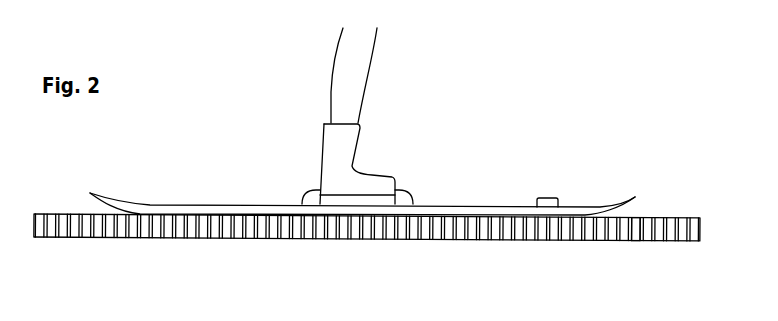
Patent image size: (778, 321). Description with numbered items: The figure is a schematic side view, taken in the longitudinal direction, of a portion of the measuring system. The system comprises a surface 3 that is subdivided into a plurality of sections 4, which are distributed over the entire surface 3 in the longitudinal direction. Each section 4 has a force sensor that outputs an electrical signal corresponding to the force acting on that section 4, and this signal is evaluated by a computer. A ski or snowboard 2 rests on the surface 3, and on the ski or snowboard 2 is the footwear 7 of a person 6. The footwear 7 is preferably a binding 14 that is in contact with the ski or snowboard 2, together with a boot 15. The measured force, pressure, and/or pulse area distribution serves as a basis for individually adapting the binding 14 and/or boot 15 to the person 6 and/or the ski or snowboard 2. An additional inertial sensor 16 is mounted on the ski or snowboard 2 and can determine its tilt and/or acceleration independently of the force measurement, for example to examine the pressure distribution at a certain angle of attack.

The ski or snowboard 2 is at (517, 207).
The surface 3 is at (652, 217).
The section 4 is at (640, 232).
The person 6 is at (359, 68).
The footwear 7 is at (347, 108).
The binding 14 is at (405, 197).
The boot 15 is at (345, 142).
The inertial sensor 16 is at (552, 198).